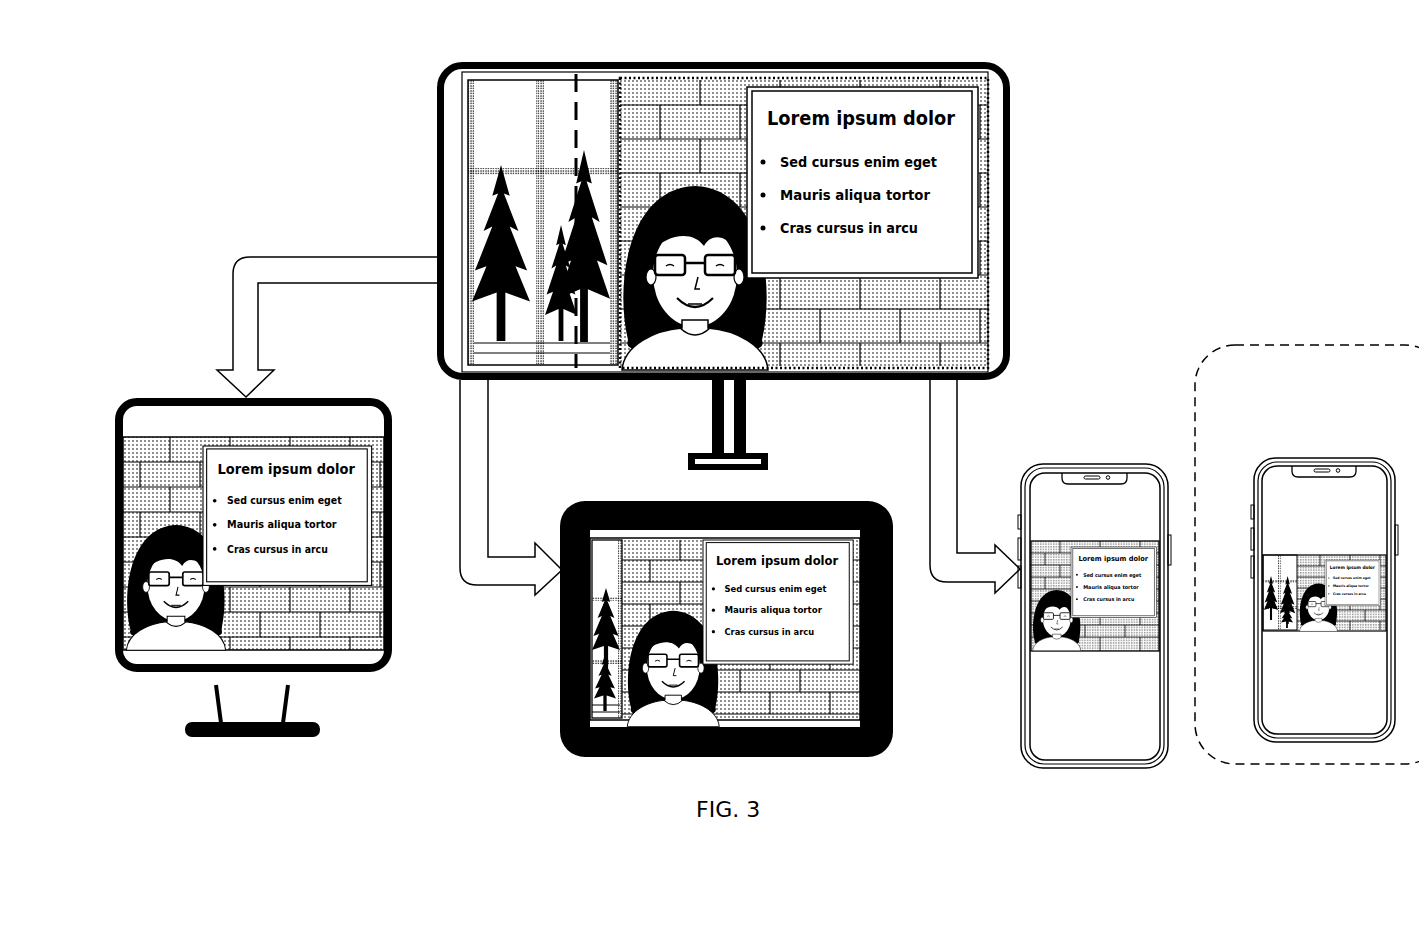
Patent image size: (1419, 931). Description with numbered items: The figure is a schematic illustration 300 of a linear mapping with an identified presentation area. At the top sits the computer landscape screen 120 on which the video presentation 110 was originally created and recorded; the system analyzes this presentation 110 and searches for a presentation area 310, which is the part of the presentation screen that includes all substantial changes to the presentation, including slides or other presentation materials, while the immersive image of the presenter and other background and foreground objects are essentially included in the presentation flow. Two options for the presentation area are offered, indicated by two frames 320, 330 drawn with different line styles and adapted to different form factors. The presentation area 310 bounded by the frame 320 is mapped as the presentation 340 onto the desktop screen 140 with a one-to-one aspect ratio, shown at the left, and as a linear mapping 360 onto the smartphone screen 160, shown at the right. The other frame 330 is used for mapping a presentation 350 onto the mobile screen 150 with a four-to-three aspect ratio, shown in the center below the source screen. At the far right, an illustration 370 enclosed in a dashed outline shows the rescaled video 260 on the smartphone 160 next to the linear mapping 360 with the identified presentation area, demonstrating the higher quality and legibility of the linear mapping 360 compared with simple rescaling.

The video presentation 110 is at (521, 116).
The landscape screen 120 is at (1012, 158).
The desktop screen 140 is at (165, 398).
The mobile screen 150 is at (653, 501).
The smartphone screen 160 is at (1126, 463).
The rescaled video 260 is at (1271, 558).
The schematic illustration 300 is at (1368, 87).
The presentation area 310 is at (678, 133).
The frame 320 is at (578, 118).
The frame 330 is at (578, 148).
The presentation 340 is at (134, 437).
The presentation 350 is at (663, 579).
The linear mapping 360 is at (1028, 558).
The illustration 370 is at (1218, 350).